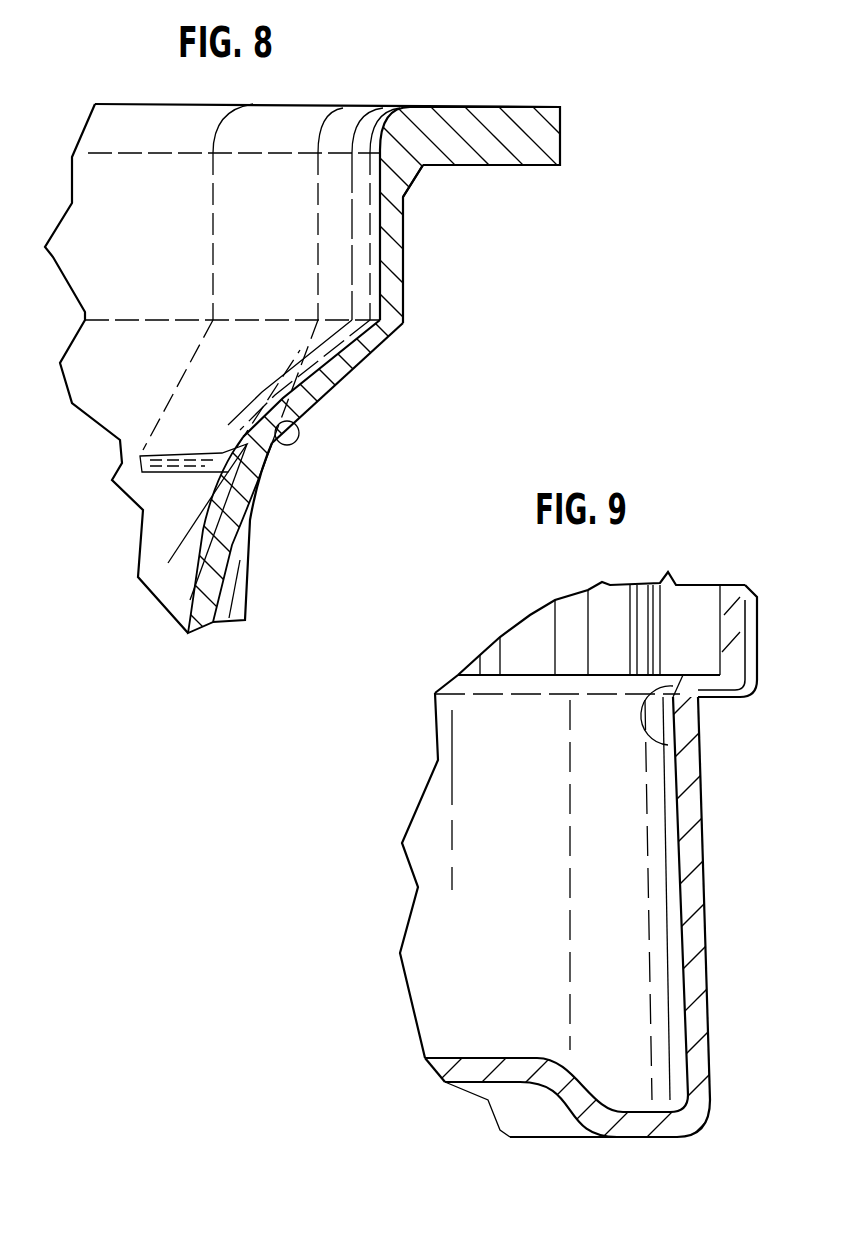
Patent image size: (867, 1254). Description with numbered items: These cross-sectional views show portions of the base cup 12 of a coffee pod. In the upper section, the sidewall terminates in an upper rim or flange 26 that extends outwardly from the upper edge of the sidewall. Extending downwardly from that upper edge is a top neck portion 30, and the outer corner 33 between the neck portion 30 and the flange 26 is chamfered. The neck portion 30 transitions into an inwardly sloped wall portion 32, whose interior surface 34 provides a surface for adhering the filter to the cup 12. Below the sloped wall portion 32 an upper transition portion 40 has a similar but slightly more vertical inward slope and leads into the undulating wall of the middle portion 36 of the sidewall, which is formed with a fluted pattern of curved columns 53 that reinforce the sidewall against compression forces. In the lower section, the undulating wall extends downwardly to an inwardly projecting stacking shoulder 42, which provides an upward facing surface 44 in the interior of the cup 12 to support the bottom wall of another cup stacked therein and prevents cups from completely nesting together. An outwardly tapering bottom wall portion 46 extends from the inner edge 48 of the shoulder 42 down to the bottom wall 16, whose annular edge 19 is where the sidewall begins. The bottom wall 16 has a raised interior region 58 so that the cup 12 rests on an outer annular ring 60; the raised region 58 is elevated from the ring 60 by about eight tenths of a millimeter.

In FIG. 8, the base cup 12 is at (588, 93).
In FIG. 9, the base cup 12 is at (702, 538).
In FIG. 8, the upper rim or flange 26 is at (538, 168).
In FIG. 8, the top neck portion 30 is at (404, 262).
In FIG. 8, the outer corner 33 is at (408, 182).
In FIG. 8, the inwardly sloped wall portion 32 is at (362, 382).
In FIG. 8, the interior surface 34 is at (288, 444).
In FIG. 8, the upper transition portion 40 is at (240, 553).
In FIG. 8, the curved columns 53 is at (248, 588).
In FIG. 9, the middle portion of the sidewall 36 is at (765, 598).
In FIG. 9, the upward facing surface 44 is at (752, 655).
In FIG. 9, the stacking shoulder 42 is at (715, 700).
In FIG. 9, the inner edge of the shoulder 48 is at (700, 760).
In FIG. 9, the outwardly tapering bottom wall portion 46 is at (705, 917).
In FIG. 9, the edge of the bottom wall 19 is at (700, 1131).
In FIG. 9, the bottom wall 16 is at (557, 1140).
In FIG. 9, the outer annular ring 60 is at (648, 1137).
In FIG. 9, the raised interior region 58 is at (488, 1100).